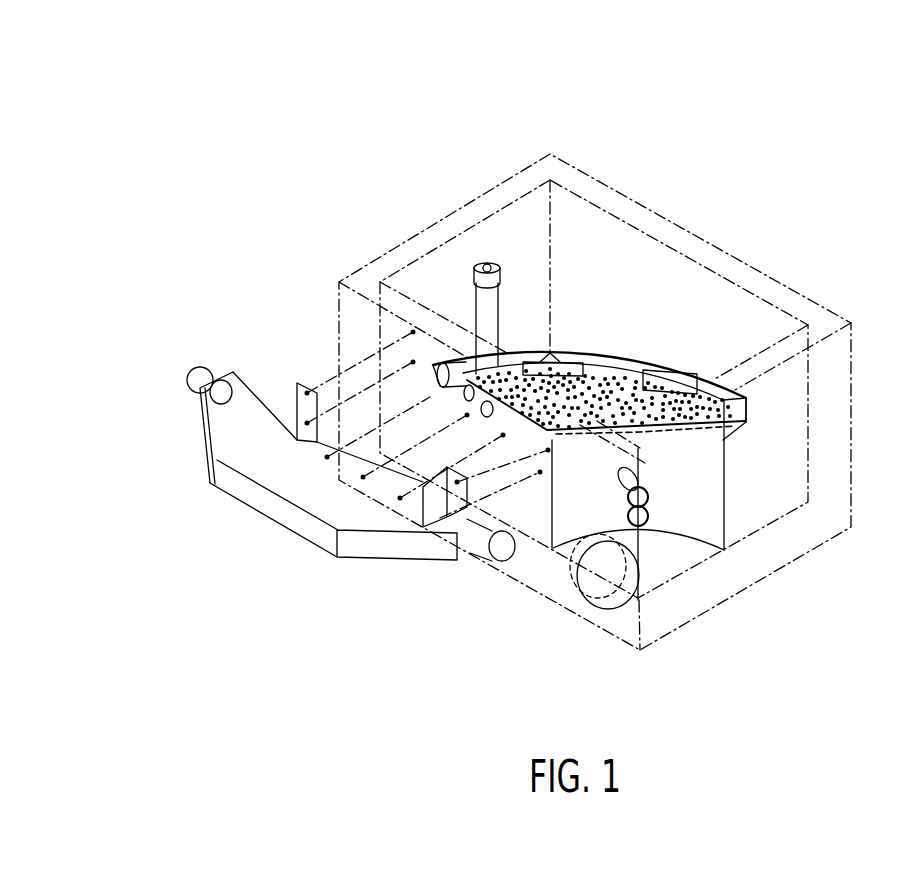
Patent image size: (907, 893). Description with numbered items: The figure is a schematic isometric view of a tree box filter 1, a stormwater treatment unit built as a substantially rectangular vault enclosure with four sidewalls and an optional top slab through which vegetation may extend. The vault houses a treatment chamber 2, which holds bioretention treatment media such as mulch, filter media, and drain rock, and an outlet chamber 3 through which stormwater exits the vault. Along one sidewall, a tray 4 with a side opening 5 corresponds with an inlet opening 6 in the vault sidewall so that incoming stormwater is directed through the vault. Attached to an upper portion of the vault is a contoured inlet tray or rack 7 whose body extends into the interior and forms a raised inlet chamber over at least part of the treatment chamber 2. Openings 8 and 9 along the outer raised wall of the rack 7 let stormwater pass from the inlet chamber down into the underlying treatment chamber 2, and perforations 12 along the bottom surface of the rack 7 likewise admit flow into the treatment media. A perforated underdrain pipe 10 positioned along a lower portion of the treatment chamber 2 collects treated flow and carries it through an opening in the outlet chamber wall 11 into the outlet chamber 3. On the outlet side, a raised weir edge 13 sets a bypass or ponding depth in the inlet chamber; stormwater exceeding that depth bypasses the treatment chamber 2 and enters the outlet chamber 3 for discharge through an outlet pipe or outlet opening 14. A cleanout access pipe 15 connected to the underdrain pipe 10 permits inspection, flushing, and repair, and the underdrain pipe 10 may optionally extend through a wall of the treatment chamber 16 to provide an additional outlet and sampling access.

The tree box filter 1 is at (643, 83).
The treatment chamber 2 is at (510, 203).
The outlet chamber 3 is at (547, 527).
The tray 4 is at (203, 438).
The side opening 5 is at (262, 488).
The inlet opening 6 is at (445, 372).
The inlet tray or rack 7 is at (553, 353).
The opening 8 is at (583, 365).
The opening 9 is at (655, 370).
The perforated underdrain pipe 10 is at (590, 570).
The outlet chamber wall 11 is at (647, 490).
The perforations 12 is at (698, 400).
The raised weir edge 13 is at (640, 420).
The outlet pipe or outlet opening 14 is at (608, 482).
The cleanout access pipe 15 is at (480, 263).
The wall of the treatment chamber 16 is at (457, 388).